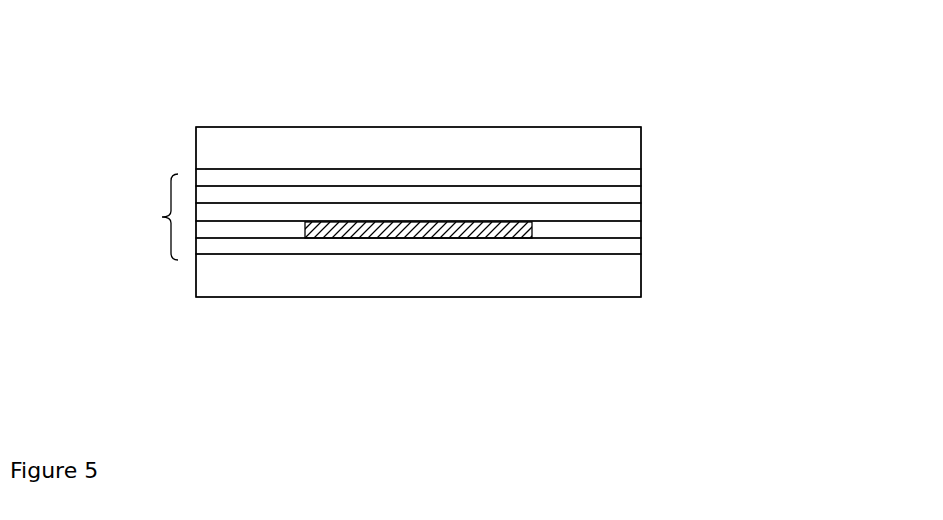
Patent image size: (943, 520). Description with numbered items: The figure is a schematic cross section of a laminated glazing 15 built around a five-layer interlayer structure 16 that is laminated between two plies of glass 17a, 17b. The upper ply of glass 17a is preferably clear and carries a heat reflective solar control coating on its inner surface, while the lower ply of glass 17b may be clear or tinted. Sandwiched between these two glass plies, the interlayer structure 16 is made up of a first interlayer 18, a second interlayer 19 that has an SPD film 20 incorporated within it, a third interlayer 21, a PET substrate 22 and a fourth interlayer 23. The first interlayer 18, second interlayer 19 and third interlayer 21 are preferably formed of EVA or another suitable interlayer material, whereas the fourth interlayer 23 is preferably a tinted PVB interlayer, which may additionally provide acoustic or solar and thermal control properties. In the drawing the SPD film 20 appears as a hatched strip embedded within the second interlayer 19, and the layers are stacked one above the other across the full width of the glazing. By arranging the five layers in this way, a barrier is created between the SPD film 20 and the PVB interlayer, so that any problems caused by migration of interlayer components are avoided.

The glazing 15 is at (700, 100).
The interlayer structure 16 is at (145, 217).
The upper ply of glass 17a is at (256, 138).
The lower ply of glass 17b is at (226, 283).
The first interlayer 18 is at (633, 247).
The second interlayer 19 is at (636, 233).
The SPD film 20 is at (437, 233).
The third interlayer 21 is at (630, 216).
The PET substrate 22 is at (202, 195).
The fourth interlayer 23 is at (633, 182).